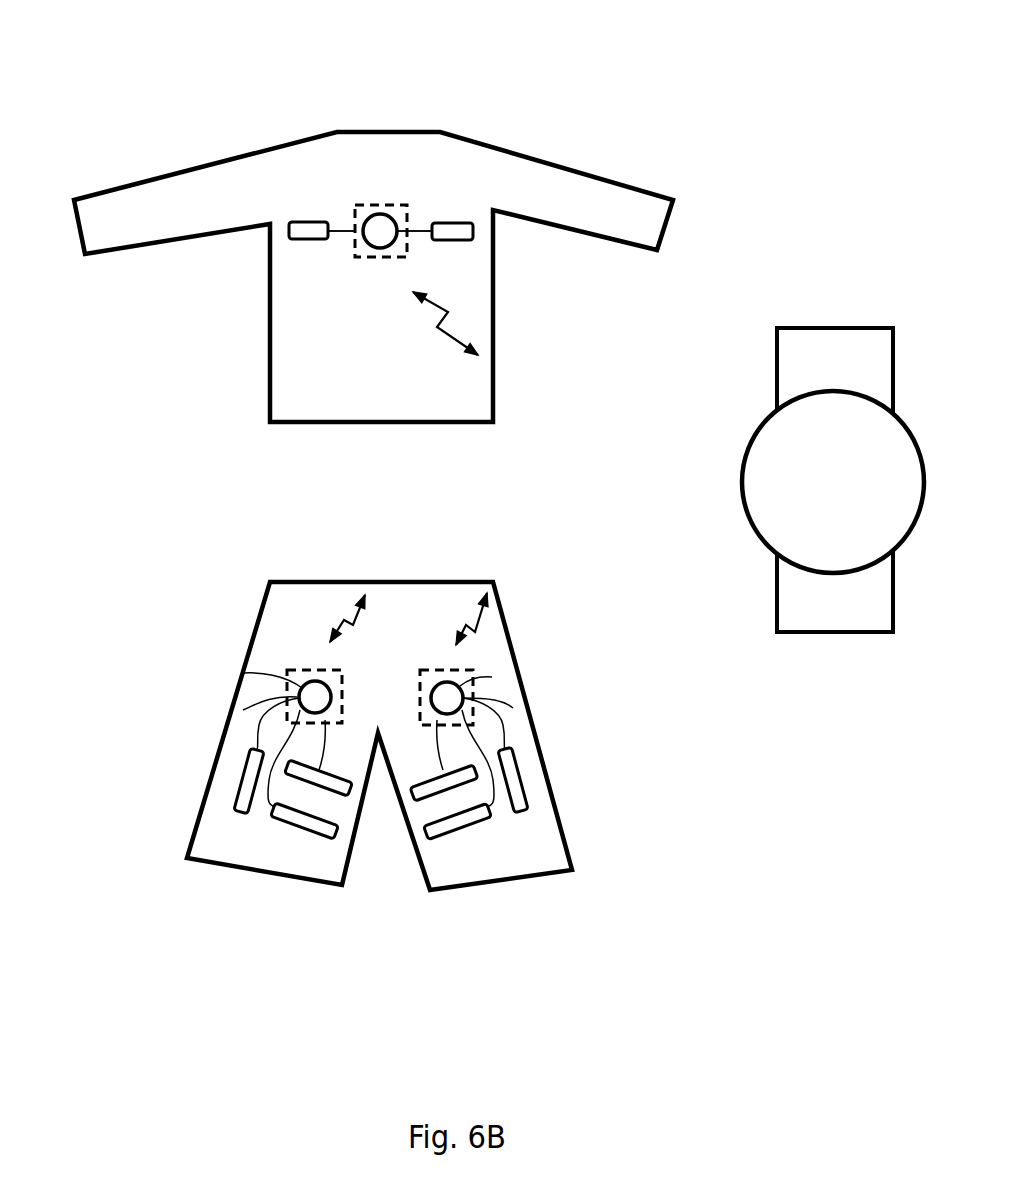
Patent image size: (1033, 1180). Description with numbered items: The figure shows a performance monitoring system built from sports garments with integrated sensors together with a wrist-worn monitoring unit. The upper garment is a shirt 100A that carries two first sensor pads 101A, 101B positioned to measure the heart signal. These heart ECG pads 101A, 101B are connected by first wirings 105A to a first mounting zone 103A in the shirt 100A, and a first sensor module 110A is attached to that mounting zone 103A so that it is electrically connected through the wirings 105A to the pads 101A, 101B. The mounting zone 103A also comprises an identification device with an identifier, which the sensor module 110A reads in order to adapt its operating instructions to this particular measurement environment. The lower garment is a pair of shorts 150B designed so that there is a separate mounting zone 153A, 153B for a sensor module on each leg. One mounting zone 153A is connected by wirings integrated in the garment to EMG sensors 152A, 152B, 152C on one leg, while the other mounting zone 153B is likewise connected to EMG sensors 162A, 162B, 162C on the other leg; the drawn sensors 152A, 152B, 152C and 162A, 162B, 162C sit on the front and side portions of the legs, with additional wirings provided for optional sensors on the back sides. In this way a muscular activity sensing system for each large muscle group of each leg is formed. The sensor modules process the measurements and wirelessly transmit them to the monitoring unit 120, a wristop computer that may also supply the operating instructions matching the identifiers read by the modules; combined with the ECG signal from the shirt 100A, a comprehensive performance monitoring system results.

The first sports garment (shirt) 100A is at (695, 213).
The first sensor pad 101A is at (289, 230).
The first sensor pad 101B is at (453, 222).
The first mounting zone 103A is at (380, 205).
The first sensor module 110A is at (407, 230).
The first wirings 105A is at (313, 239).
The monitoring unit (wristop computer) 120 is at (740, 412).
The shorts 150B is at (616, 838).
The mounting zone 153A is at (315, 681).
The mounting zone 153B is at (441, 680).
The EMG sensor 152A is at (245, 776).
The EMG sensor 152B is at (307, 830).
The EMG sensor 152C is at (331, 835).
The EMG sensor 162A is at (523, 778).
The EMG sensor 162B is at (460, 832).
The EMG sensor 162C is at (443, 840).